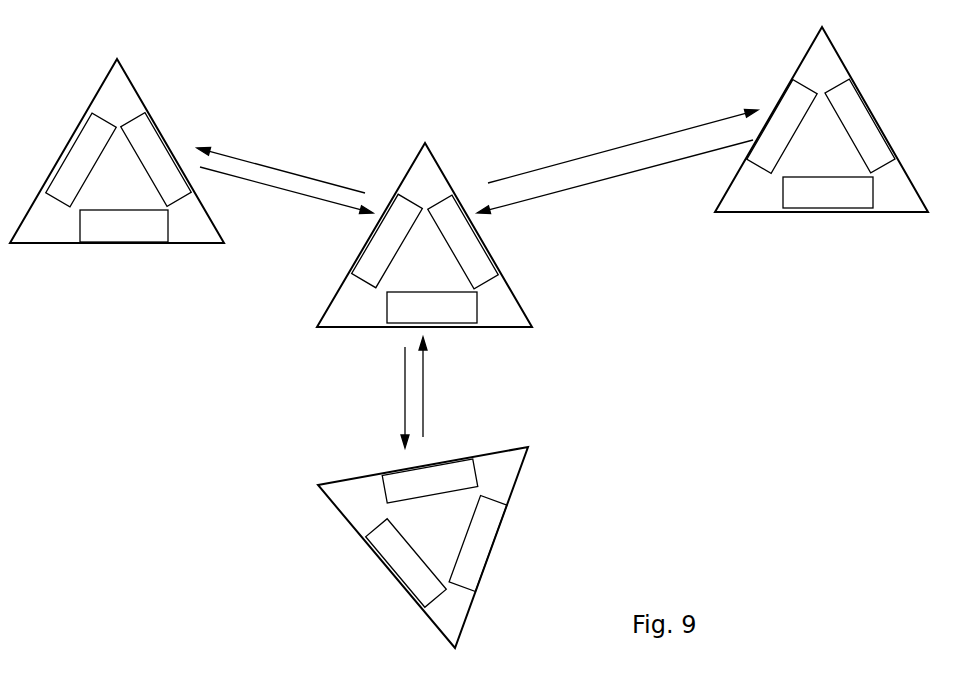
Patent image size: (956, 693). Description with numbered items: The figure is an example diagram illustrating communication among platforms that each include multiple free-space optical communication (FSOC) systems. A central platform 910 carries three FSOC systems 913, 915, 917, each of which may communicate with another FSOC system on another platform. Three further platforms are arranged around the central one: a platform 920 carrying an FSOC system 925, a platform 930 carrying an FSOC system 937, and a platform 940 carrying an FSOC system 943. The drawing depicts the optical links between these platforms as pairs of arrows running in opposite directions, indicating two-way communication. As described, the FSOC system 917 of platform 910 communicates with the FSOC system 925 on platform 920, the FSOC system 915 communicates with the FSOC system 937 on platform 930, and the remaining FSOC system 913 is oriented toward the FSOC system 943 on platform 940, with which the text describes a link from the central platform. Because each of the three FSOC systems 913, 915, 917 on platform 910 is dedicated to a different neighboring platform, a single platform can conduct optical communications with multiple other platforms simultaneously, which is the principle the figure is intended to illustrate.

The platform 910 is at (455, 256).
The FSOC system 913 is at (457, 319).
The FSOC system 915 is at (483, 243).
The FSOC system 917 is at (362, 252).
The platform 920 is at (120, 150).
The FSOC system 925 is at (168, 142).
The platform 930 is at (814, 147).
The FSOC system 937 is at (783, 102).
The platform 940 is at (462, 529).
The FSOC system 943 is at (455, 467).